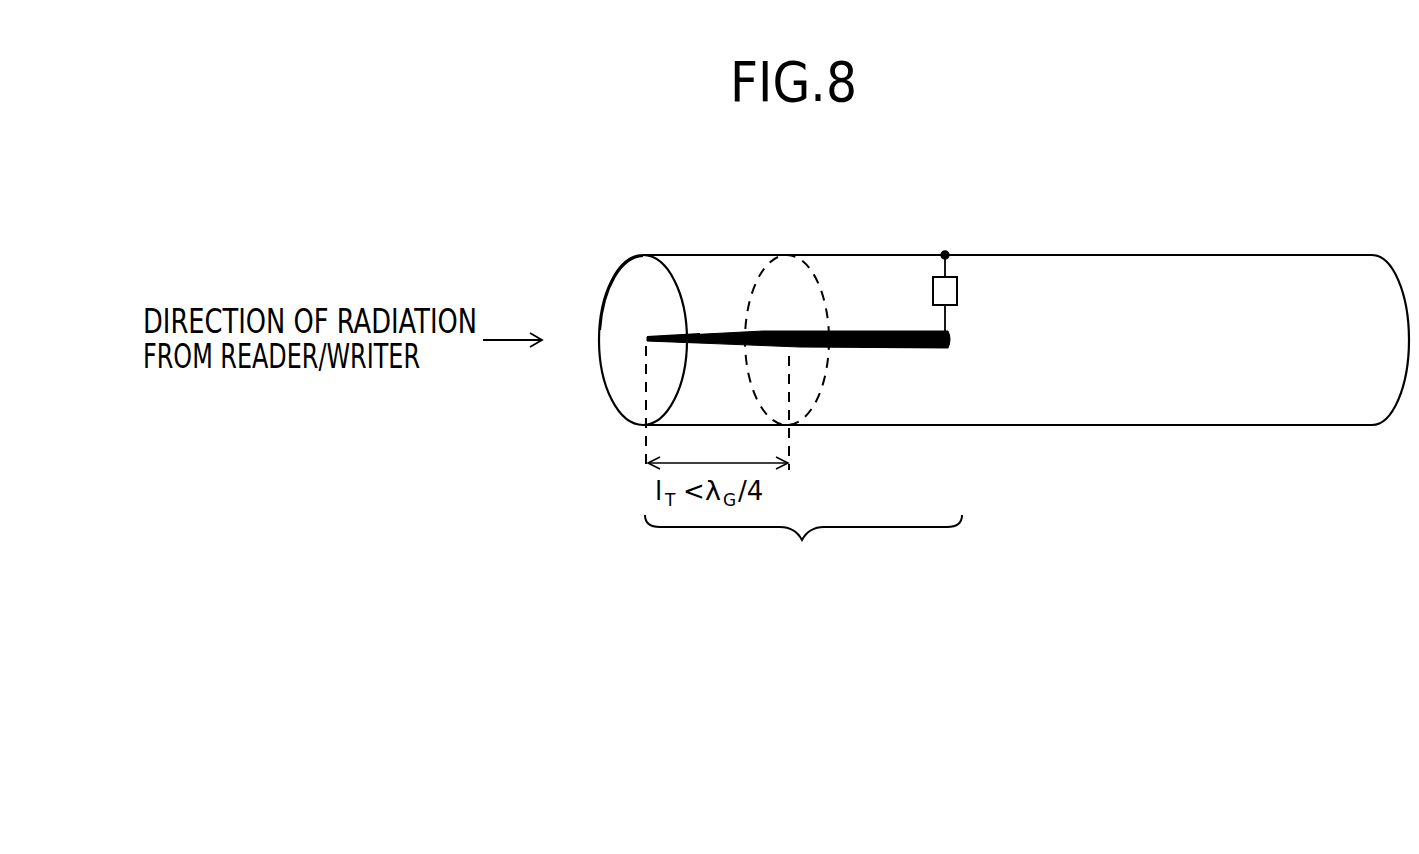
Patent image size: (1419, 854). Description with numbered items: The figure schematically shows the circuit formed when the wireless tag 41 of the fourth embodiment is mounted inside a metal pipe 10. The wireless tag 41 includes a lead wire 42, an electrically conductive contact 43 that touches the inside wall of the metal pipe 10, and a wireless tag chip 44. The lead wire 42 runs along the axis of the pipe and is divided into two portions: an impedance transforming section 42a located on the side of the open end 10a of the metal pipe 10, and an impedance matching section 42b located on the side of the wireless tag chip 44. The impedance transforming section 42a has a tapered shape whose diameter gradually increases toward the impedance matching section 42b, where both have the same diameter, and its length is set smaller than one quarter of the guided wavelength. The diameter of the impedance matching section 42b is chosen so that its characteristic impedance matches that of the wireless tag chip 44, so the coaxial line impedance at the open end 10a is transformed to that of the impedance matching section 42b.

The metal pipe 10 is at (1300, 402).
The open end 10a is at (638, 273).
The wireless tag 41 is at (803, 550).
The lead wire 42 is at (950, 340).
The impedance transforming section 42a is at (713, 331).
The impedance matching section 42b is at (873, 330).
The electrically conductive contact 43 is at (945, 254).
The wireless tag chip 44 is at (957, 287).